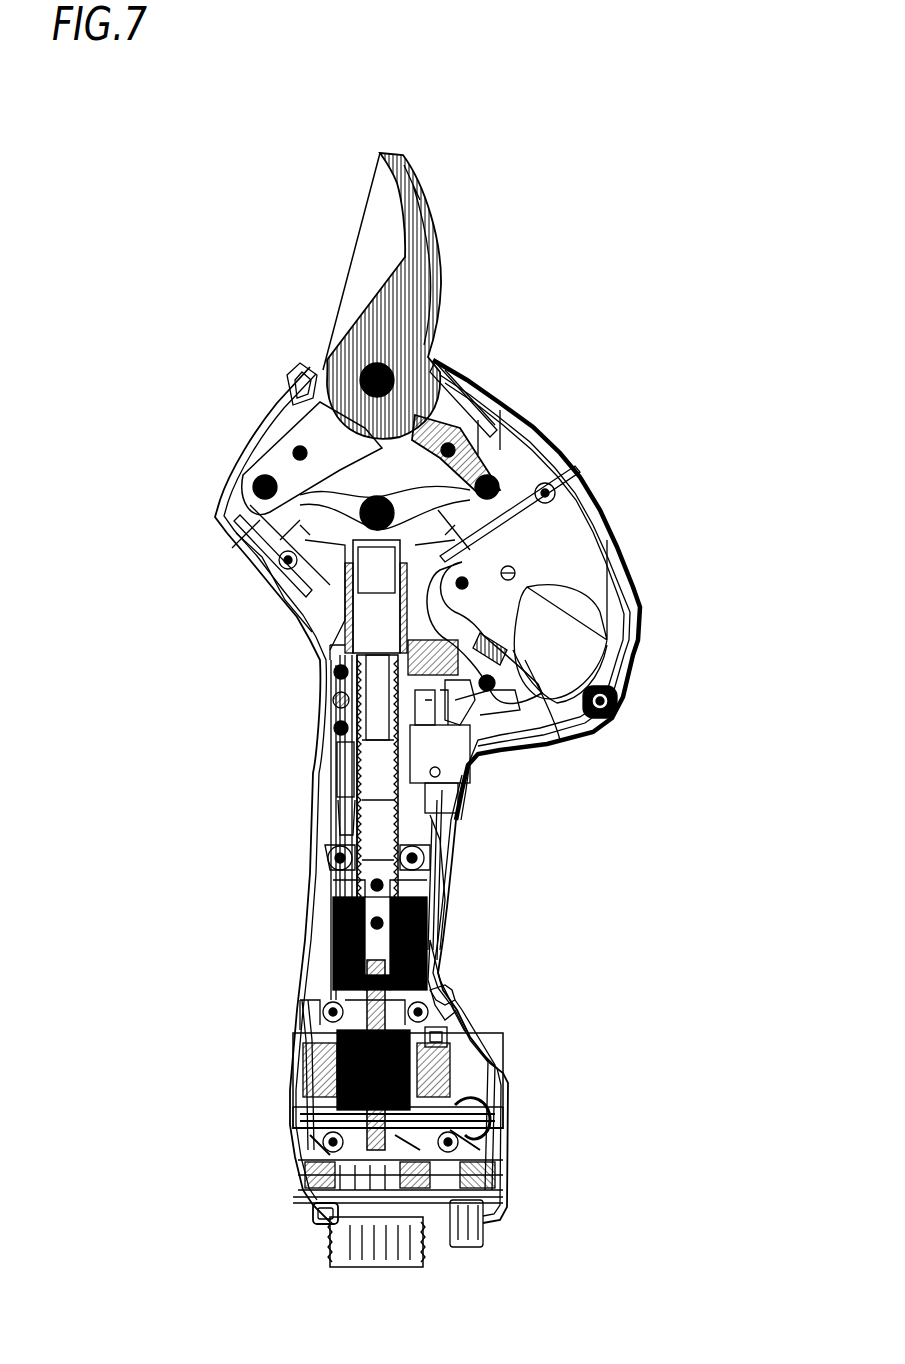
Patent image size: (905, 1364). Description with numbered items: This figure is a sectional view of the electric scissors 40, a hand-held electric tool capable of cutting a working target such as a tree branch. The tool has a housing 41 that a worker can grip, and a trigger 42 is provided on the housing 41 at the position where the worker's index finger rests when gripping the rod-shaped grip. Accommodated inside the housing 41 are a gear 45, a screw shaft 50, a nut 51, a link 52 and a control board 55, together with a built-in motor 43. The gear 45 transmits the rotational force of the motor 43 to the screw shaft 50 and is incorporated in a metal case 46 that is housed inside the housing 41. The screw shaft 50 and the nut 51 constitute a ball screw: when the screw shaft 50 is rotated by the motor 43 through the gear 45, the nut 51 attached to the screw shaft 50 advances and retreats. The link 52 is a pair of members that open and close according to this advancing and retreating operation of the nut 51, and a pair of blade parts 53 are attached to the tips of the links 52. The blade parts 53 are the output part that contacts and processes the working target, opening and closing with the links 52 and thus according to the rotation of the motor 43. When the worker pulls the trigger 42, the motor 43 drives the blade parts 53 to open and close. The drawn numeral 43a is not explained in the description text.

The electric scissors 40 is at (662, 312).
The housing 41 is at (464, 805).
The trigger 42 is at (497, 676).
The motor 43 is at (448, 1070).
The motor output shaft 43a is at (453, 1025).
The gear 45 is at (447, 985).
The metal case 46 is at (448, 953).
The screw shaft 50 is at (363, 820).
The nut 51 is at (325, 628).
The link 52 is at (307, 480).
The blade part 53 is at (442, 237).
The control board 55 is at (325, 1221).